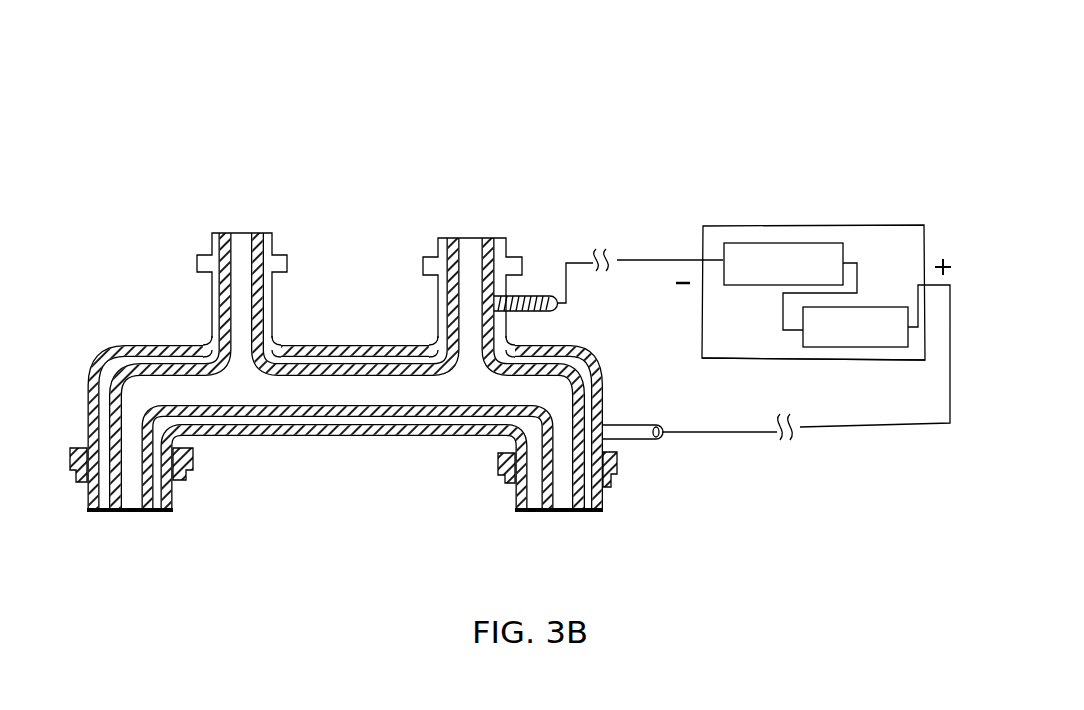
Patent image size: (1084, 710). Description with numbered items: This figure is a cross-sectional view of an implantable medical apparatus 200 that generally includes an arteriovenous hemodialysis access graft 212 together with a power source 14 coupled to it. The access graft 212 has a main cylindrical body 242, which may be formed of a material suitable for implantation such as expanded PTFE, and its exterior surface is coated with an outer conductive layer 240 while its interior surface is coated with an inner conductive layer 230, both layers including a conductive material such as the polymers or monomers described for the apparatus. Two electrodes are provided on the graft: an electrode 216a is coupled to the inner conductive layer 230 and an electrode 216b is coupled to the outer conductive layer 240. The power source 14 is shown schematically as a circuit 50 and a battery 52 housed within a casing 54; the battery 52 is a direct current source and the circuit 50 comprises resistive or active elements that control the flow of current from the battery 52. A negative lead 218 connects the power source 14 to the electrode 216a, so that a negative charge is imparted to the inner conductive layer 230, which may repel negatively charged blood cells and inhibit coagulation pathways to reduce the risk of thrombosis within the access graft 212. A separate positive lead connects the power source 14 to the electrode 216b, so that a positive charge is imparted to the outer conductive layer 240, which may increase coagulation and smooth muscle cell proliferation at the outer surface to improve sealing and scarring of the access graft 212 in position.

The power source 14 is at (817, 208).
The circuit 50 is at (763, 243).
The battery 52 is at (853, 347).
The casing 54 is at (738, 360).
The implantable medical apparatus 200 is at (512, 188).
The arteriovenous hemodialysis access graft 212 is at (305, 246).
The electrode 216a is at (538, 296).
The electrode 216b is at (648, 440).
The negative lead 218 is at (640, 258).
The inner conductive layer 230 is at (273, 400).
The outer conductive layer 240 is at (303, 433).
The main cylindrical body 242 is at (245, 417).